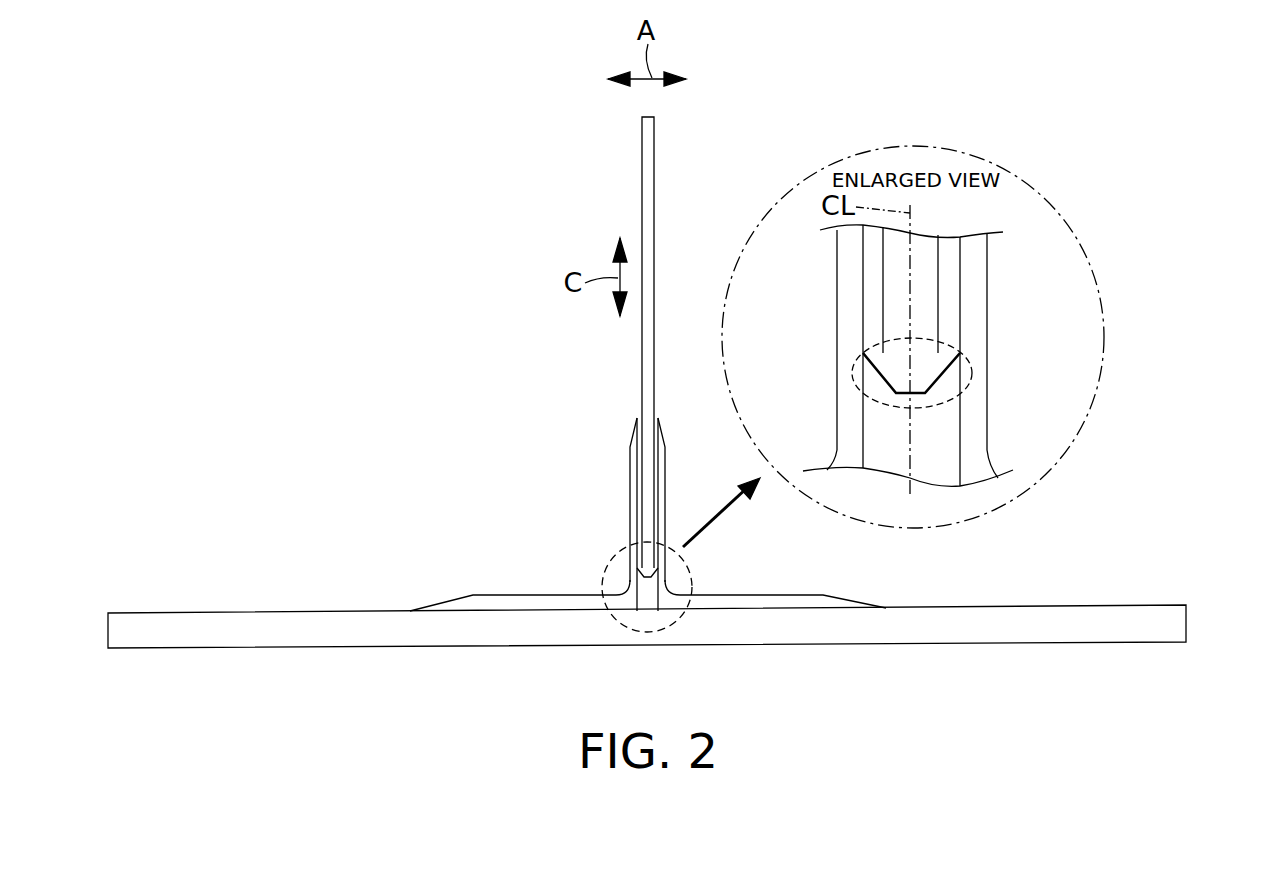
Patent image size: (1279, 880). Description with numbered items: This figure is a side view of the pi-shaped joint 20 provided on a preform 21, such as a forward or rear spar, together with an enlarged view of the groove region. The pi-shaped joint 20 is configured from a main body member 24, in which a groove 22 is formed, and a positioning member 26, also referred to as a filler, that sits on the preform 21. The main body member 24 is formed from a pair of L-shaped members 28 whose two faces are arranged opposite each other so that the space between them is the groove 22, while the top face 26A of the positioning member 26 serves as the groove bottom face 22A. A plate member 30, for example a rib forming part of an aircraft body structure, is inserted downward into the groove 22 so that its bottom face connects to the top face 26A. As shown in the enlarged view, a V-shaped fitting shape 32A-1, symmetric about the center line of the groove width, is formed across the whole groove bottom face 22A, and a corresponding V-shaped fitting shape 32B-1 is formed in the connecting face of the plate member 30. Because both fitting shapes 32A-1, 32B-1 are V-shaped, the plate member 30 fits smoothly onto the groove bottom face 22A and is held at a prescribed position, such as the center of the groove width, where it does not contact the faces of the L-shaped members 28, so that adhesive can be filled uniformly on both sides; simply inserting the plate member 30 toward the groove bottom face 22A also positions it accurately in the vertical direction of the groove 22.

The pi-shaped joint 20 is at (599, 408).
The preform 21 is at (952, 645).
The groove 22 is at (638, 443).
The groove bottom face 22A is at (858, 375).
The main body member 24 is at (833, 406).
The L-shaped members 28 is at (668, 458).
The positioning member 26 is at (640, 590).
The top face 26A is at (958, 448).
The plate member 30 is at (641, 158).
The fitting shape 32A-1 is at (972, 370).
The fitting shape 32B-1 is at (935, 373).